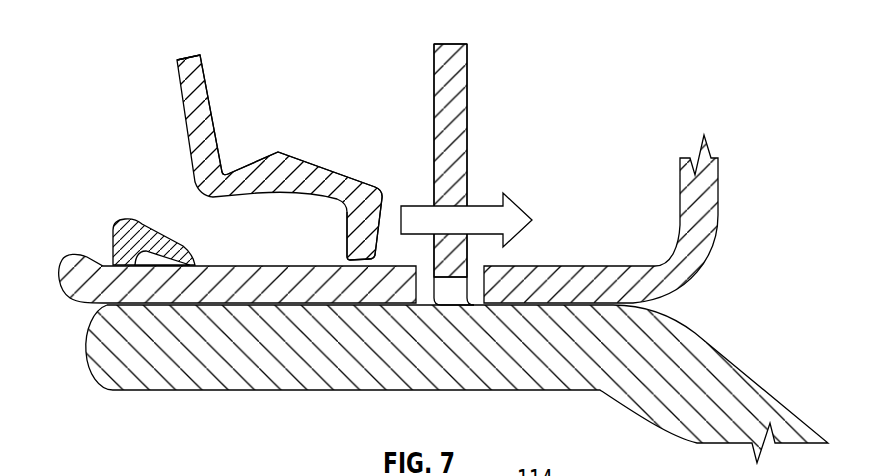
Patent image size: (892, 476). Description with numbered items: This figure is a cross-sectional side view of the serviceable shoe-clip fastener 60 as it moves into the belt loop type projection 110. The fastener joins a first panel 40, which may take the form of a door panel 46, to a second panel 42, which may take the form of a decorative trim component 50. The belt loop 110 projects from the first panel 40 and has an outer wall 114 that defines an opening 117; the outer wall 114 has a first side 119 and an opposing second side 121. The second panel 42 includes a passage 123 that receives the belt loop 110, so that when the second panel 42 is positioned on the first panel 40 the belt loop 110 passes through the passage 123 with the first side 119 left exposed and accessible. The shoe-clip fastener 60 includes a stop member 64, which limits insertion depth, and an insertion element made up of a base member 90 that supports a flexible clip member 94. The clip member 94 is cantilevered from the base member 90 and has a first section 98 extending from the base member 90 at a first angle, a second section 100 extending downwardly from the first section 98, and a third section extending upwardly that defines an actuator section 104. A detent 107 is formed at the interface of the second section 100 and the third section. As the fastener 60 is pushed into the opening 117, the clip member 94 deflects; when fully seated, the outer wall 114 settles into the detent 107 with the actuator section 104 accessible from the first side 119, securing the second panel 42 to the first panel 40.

The first panel 40 is at (246, 381).
The second panel 42 is at (742, 228).
The door panel 46 is at (88, 348).
The decorative trim component 50 is at (683, 288).
The serviceable shoe-clip fastener 60 is at (96, 99).
The stop member 64 is at (114, 217).
The base member 90 is at (324, 240).
The clip member 94 is at (217, 68).
The first section 98 is at (315, 172).
The second section 100 is at (264, 156).
The actuator section 104 is at (188, 58).
The detent 107 is at (226, 173).
The belt loop type projection 110 is at (492, 115).
The outer wall 114 is at (450, 44).
The opening 117 is at (447, 277).
The first side 119 is at (433, 108).
The second side 121 is at (468, 78).
The passage 123 is at (470, 303).